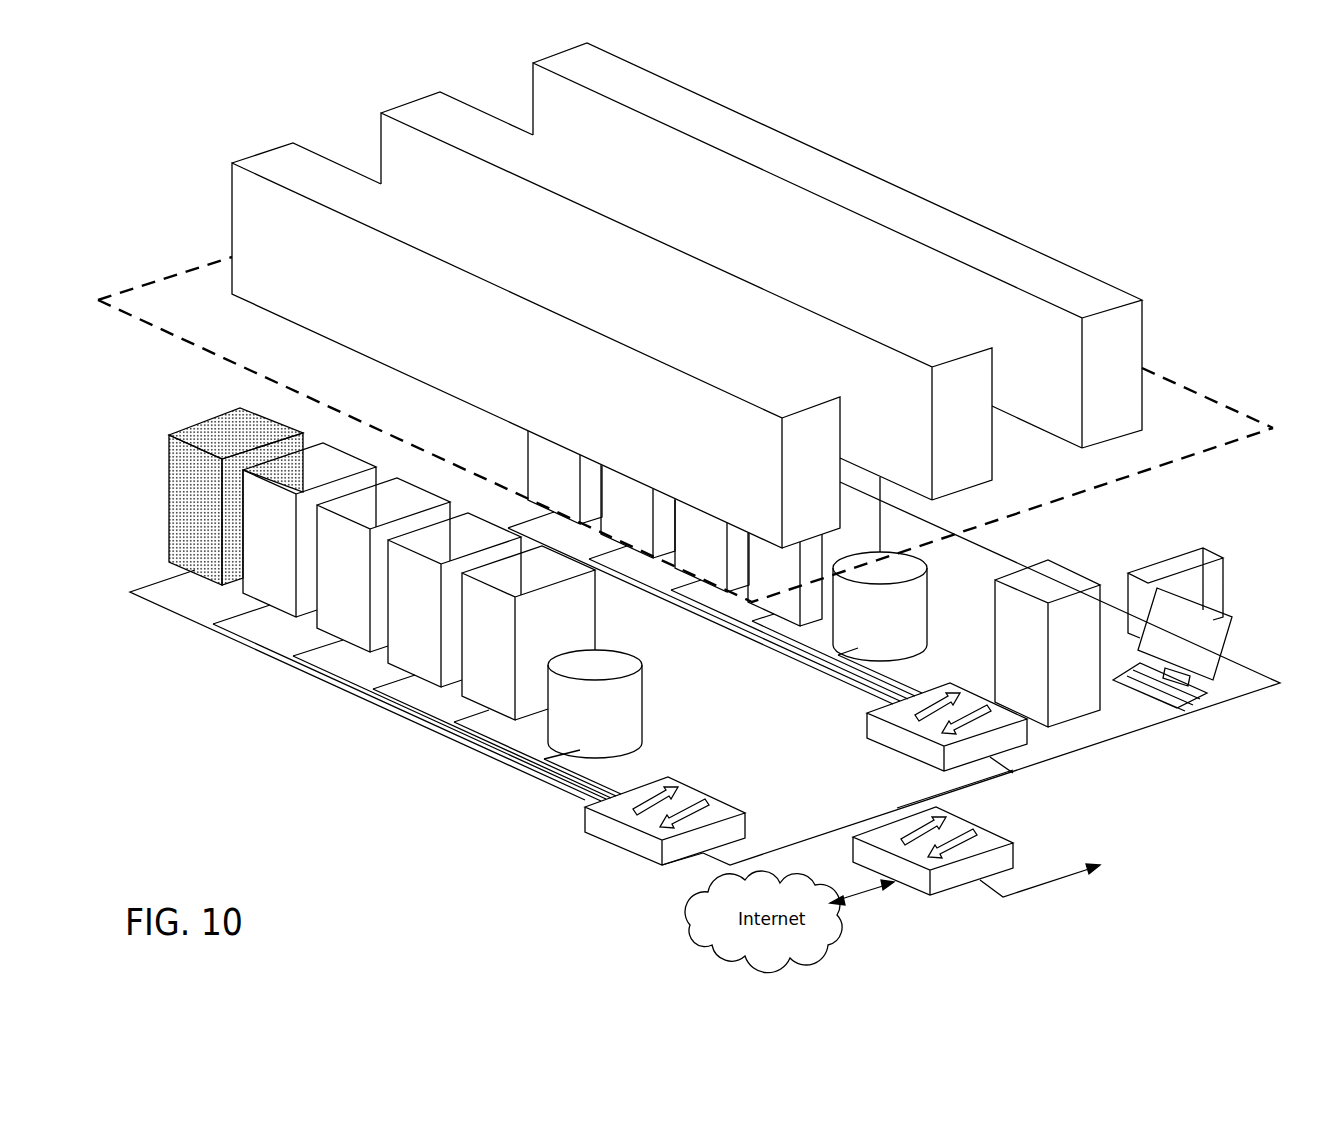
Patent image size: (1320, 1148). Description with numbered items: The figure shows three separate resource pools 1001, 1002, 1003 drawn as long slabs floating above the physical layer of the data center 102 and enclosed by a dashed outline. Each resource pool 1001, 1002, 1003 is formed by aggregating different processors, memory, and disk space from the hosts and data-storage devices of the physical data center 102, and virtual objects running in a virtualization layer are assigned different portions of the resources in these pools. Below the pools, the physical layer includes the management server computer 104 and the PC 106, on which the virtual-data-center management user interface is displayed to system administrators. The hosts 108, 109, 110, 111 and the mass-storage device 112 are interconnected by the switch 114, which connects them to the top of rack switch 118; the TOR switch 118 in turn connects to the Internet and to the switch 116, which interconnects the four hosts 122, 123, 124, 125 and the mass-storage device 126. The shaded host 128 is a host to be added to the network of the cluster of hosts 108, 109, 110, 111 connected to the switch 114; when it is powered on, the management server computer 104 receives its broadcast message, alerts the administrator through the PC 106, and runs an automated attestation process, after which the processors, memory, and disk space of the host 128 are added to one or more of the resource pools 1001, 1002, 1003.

The resource pool 1001 is at (313, 278).
The resource pool 1002 is at (460, 193).
The resource pool 1003 is at (593, 133).
The data center 102 is at (497, 825).
The management server computer 104 is at (1067, 568).
The PC 106 is at (1206, 550).
The host 108 is at (287, 555).
The host 109 is at (359, 590).
The host 110 is at (433, 626).
The host 111 is at (506, 661).
The mass-storage device 112 is at (613, 723).
The switch 114 is at (712, 794).
The switch 116 is at (864, 731).
The top of rack switch 118 is at (988, 832).
The host 122 is at (573, 491).
The host 123 is at (646, 523).
The host 124 is at (719, 555).
The host 125 is at (793, 578).
The mass-storage device 126 is at (893, 625).
The host 128 is at (215, 526).